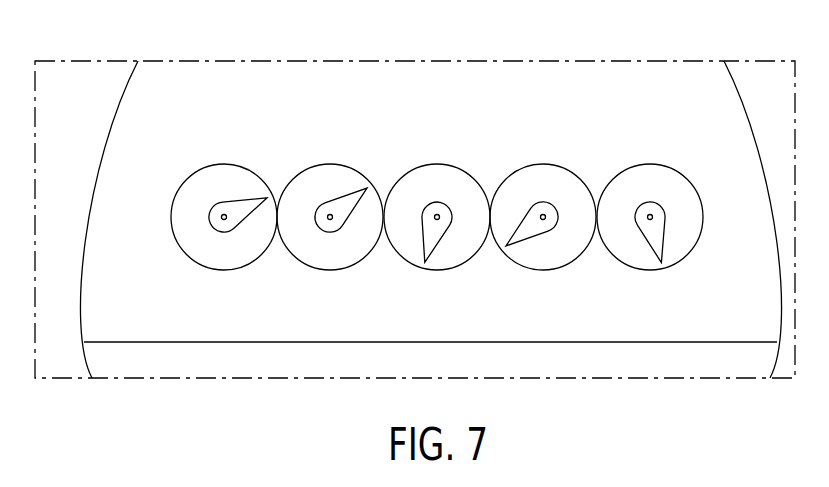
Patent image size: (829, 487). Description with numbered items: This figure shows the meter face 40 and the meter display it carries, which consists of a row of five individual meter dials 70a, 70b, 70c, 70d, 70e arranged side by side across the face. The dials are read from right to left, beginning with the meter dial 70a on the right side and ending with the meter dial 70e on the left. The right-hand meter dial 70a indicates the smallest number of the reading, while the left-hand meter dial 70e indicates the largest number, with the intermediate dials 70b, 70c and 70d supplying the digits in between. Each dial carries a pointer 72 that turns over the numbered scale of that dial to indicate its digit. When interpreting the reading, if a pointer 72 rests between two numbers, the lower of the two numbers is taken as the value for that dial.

The meter face 40 is at (337, 82).
The meter dial 70a is at (611, 183).
The meter dial 70b is at (504, 183).
The meter dial 70c is at (398, 183).
The meter dial 70d is at (291, 183).
The meter dial 70e is at (217, 197).
The pointer 72 is at (240, 200).